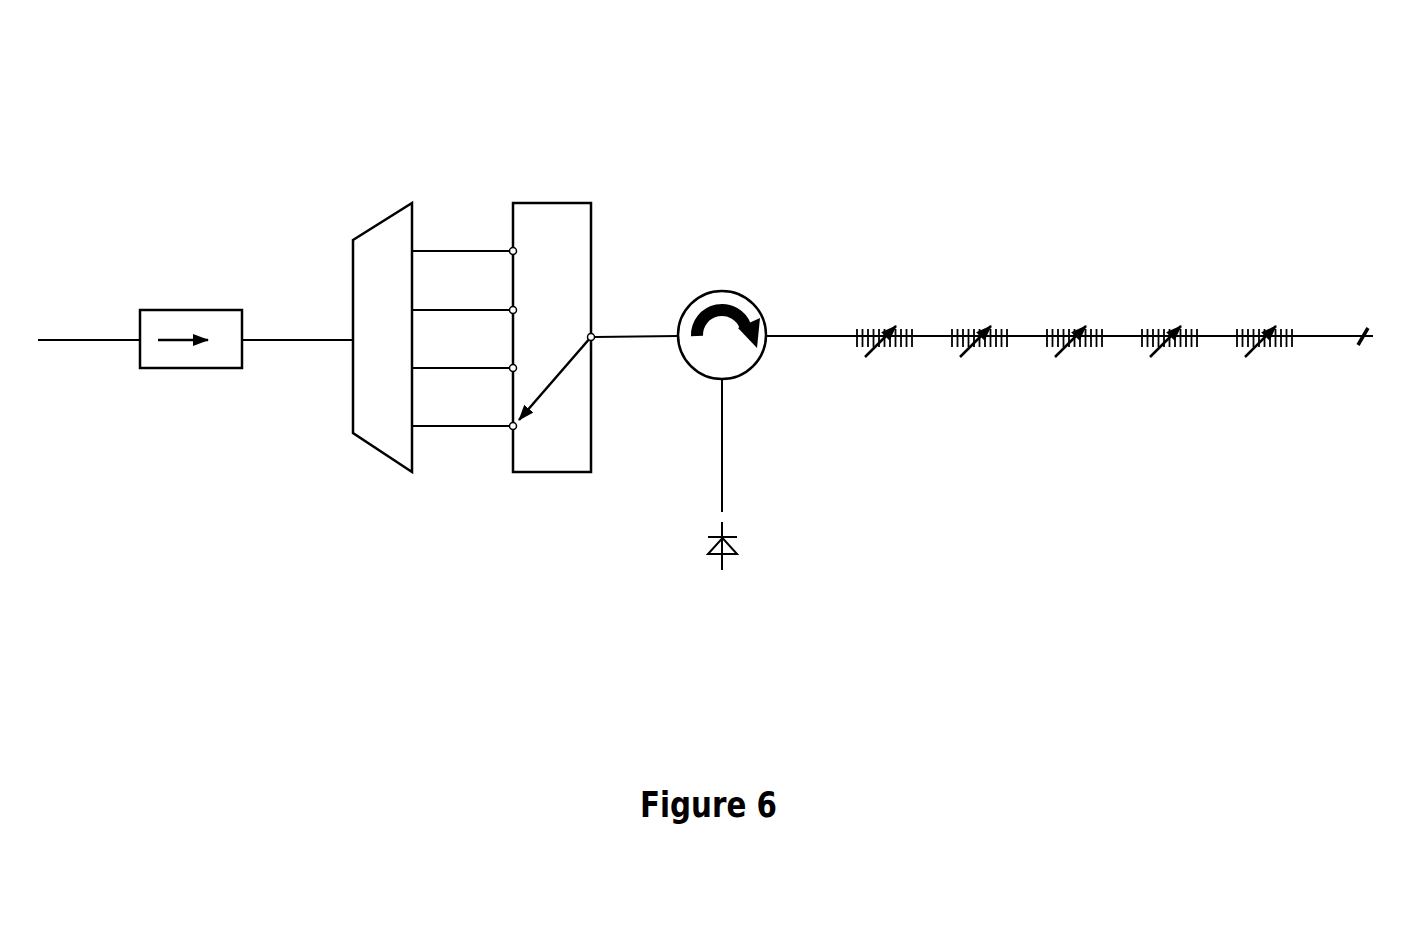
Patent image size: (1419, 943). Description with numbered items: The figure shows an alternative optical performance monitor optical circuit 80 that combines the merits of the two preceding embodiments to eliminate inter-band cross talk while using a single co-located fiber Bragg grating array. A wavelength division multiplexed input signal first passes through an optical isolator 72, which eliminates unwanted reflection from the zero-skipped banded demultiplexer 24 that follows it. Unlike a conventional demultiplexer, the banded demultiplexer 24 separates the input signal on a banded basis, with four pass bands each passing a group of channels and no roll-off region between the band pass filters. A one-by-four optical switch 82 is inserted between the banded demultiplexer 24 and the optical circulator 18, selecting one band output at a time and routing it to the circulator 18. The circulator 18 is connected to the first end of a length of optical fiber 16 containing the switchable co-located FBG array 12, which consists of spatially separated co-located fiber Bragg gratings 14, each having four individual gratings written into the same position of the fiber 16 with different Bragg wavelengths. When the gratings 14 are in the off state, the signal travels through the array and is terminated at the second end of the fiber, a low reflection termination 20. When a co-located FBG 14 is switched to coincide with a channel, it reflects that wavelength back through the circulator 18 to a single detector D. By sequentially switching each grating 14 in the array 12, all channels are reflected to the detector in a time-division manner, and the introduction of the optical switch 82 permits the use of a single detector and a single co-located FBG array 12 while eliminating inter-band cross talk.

The optical circuit 80 is at (1012, 46).
The optical isolator 72 is at (180, 378).
The banded demultiplexer 24 is at (380, 458).
The 1×4 optical switch 82 is at (533, 478).
The optical circulator 18 is at (684, 311).
The optical fiber 16 is at (808, 339).
The co-located fiber Bragg grating 14 is at (915, 335).
The co-located FBG array 12 is at (1297, 353).
The low reflection termination 20 is at (1371, 336).